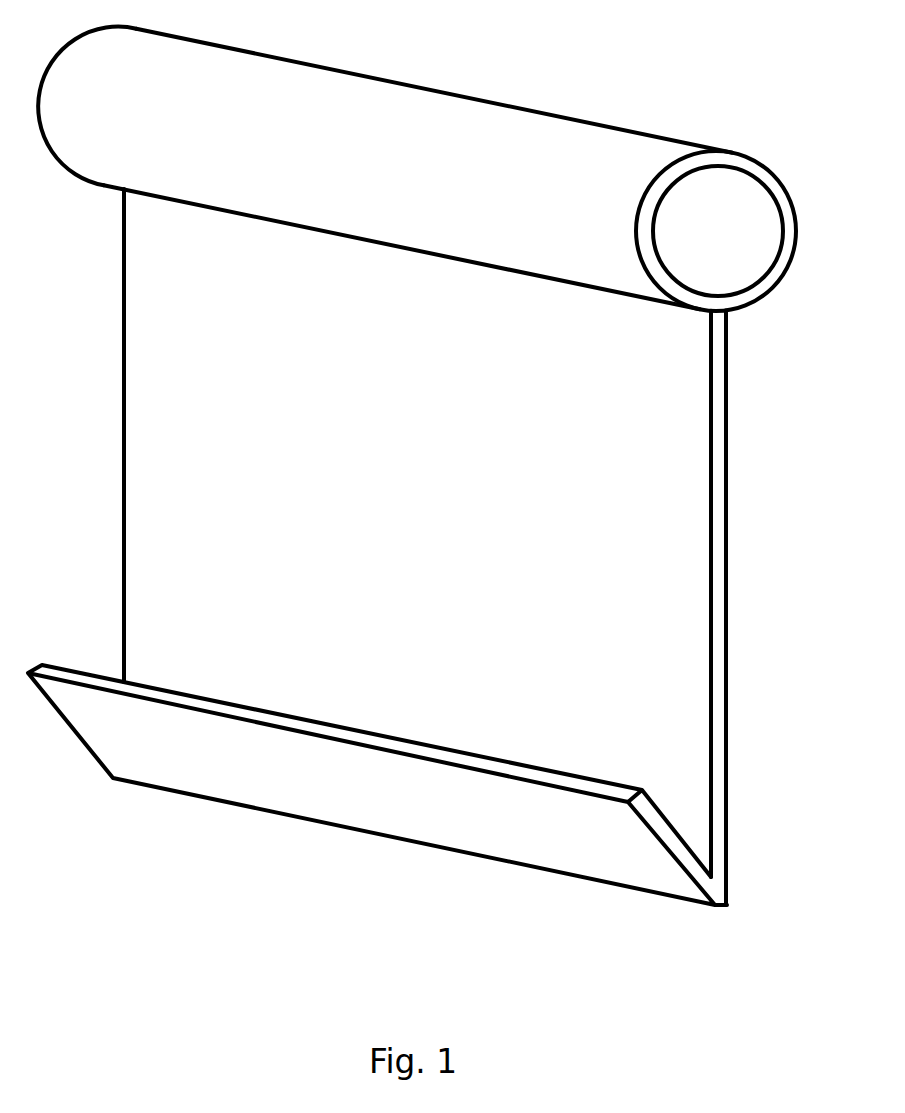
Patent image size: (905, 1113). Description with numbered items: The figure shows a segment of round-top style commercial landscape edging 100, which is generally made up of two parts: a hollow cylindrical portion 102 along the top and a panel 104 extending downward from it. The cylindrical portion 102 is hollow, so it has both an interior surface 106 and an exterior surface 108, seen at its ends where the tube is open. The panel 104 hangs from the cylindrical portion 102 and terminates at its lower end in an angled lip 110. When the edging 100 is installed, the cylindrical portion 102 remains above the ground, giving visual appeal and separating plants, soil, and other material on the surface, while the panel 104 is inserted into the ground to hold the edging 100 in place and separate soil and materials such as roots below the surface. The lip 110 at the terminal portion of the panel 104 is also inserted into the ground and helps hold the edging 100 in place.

The commercial landscape edging 100 is at (415, 470).
The hollow cylindrical portion 102 is at (418, 169).
The panel 104 is at (407, 502).
The interior surface 106 is at (735, 240).
The exterior surface 108 is at (113, 112).
The angled lip 110 is at (363, 806).